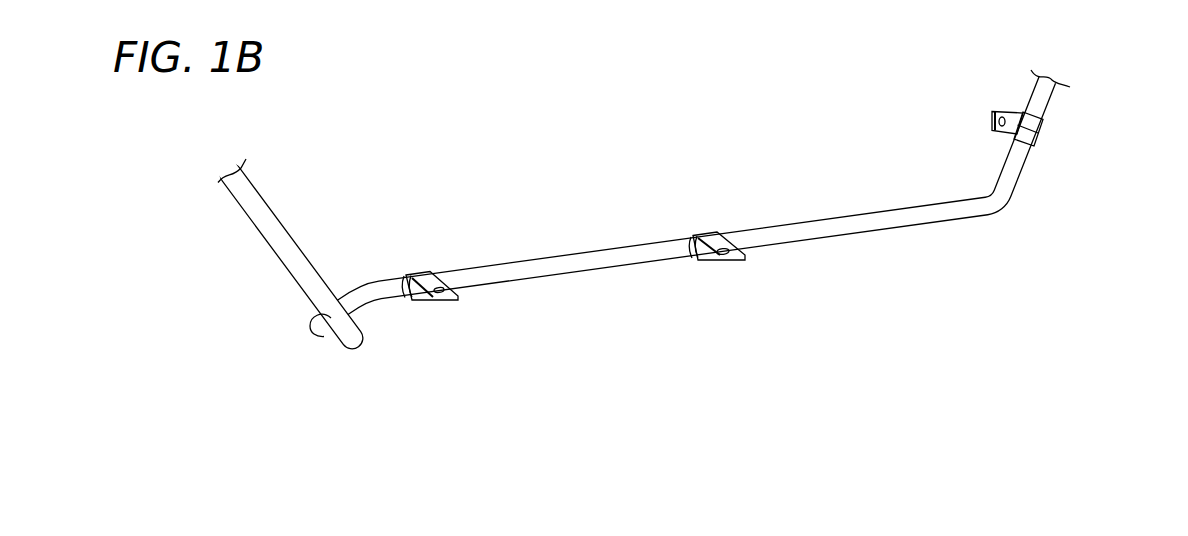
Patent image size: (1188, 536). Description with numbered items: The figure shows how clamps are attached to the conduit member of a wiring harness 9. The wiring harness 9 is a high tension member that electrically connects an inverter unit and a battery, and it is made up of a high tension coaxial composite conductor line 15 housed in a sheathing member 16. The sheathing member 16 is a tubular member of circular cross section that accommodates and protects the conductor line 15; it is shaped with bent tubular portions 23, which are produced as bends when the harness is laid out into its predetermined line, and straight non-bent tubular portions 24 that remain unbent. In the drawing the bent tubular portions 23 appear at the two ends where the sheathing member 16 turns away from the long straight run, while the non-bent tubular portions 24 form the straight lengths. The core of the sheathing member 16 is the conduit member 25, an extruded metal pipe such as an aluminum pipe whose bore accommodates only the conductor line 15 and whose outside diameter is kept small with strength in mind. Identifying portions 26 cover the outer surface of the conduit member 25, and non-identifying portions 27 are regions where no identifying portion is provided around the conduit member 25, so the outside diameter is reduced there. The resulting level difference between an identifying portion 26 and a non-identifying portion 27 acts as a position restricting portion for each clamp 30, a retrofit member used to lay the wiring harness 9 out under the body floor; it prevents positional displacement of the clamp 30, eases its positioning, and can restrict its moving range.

The wiring harness 9 is at (679, 228).
The high tension coaxial composite conductor line 15 is at (867, 226).
The sheathing member 16 is at (747, 337).
The bent tubular portion 23 is at (316, 337).
The non-bent tubular portion 24 is at (273, 210).
The conduit member 25 is at (663, 262).
The identifying portion 26 is at (603, 260).
The non-identifying portion 27 is at (698, 262).
The clamp 30 is at (421, 278).